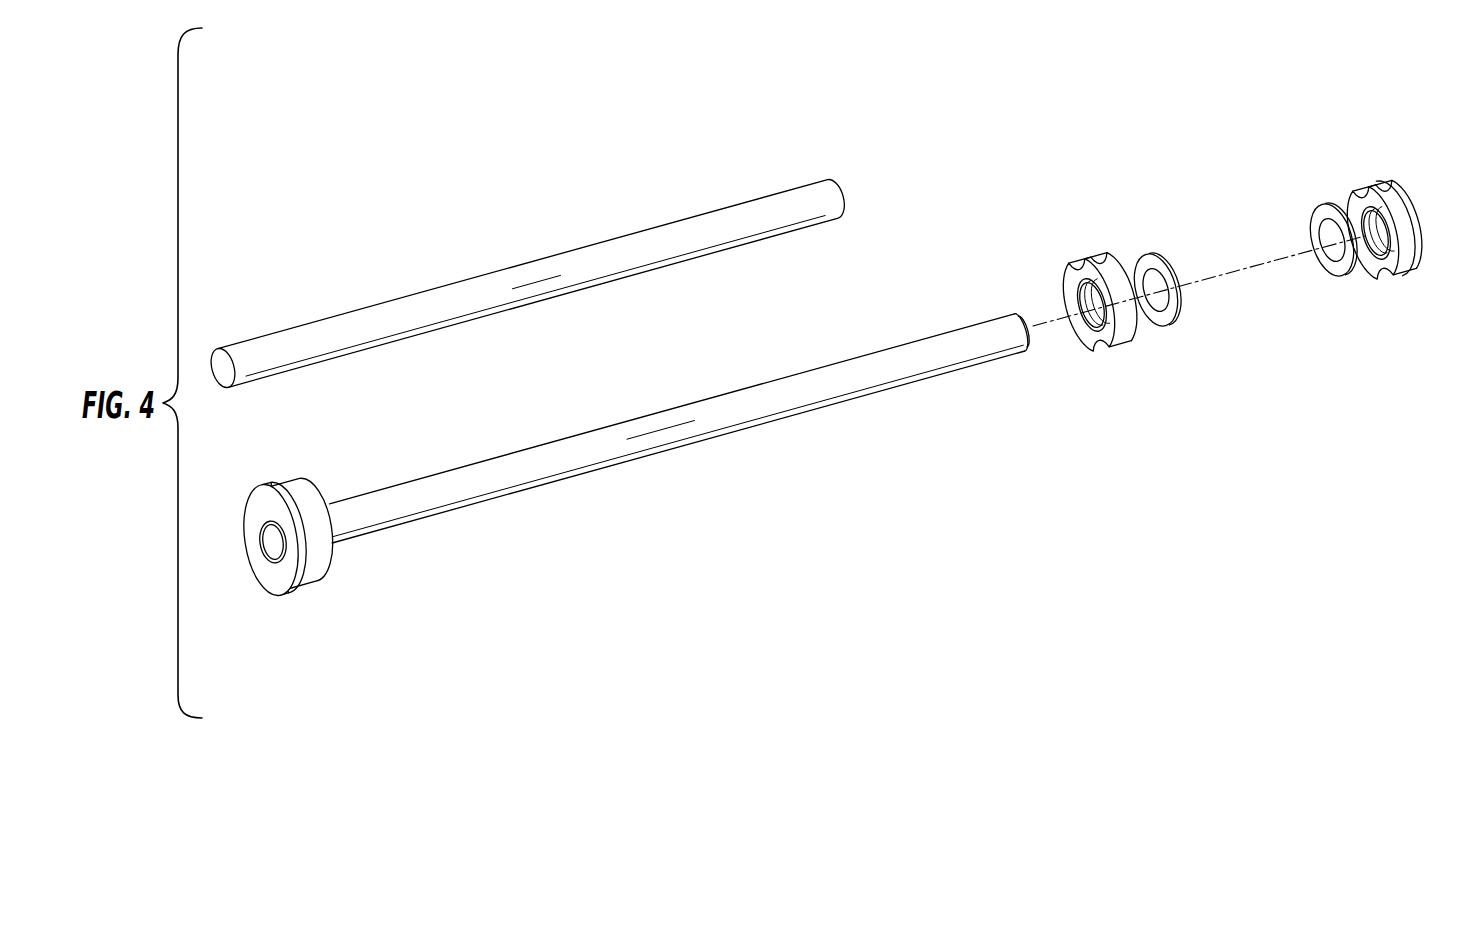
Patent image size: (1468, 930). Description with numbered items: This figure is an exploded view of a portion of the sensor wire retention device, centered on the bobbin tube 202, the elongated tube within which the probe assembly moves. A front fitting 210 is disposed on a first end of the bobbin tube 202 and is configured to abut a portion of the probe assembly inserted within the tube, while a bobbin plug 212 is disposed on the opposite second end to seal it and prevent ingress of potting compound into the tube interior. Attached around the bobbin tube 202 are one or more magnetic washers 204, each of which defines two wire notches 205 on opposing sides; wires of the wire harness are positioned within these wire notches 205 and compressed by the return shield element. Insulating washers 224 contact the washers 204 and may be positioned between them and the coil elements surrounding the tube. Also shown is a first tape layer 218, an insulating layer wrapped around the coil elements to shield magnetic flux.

The bobbin tube 202 is at (685, 357).
The washer 204 is at (1127, 333).
The wire notch 205 is at (1107, 267).
The front fitting 210 is at (250, 492).
The bobbin plug 212 is at (1022, 308).
The first tape layer 218 is at (735, 210).
The insulating washer 224 is at (1162, 272).